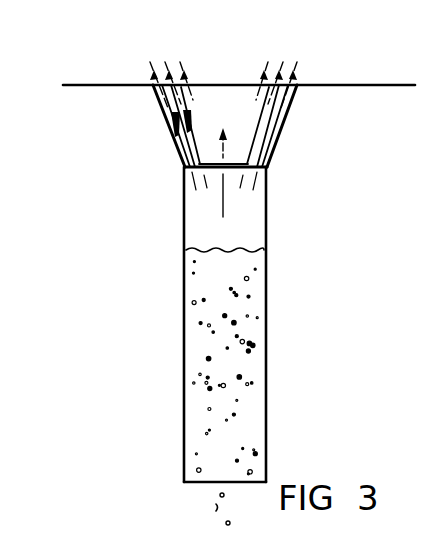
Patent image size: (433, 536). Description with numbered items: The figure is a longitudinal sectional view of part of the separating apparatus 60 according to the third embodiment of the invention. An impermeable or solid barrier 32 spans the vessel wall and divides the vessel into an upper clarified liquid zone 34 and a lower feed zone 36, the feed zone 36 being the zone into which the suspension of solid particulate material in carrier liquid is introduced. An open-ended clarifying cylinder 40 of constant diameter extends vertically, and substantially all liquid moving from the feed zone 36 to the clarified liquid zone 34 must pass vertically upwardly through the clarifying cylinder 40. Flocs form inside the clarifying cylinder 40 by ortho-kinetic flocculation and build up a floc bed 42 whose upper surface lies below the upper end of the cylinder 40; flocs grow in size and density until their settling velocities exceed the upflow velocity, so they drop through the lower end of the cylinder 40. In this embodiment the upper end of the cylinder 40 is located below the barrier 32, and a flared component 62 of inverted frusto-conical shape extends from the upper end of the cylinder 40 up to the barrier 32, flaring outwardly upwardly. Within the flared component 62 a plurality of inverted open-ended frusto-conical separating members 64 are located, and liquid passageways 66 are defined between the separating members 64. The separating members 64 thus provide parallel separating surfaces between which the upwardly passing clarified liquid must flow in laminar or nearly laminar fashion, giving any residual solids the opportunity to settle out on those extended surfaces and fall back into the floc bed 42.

The barrier 32 is at (356, 85).
The clarified liquid zone 34 is at (80, 67).
The feed zone 36 is at (112, 133).
The clarifying cylinder 40 is at (267, 370).
The floc bed 42 is at (233, 298).
The separating apparatus 60 is at (246, 143).
The flared component 62 is at (279, 140).
The separating members 64 is at (260, 123).
The liquid passageways 66 is at (184, 140).